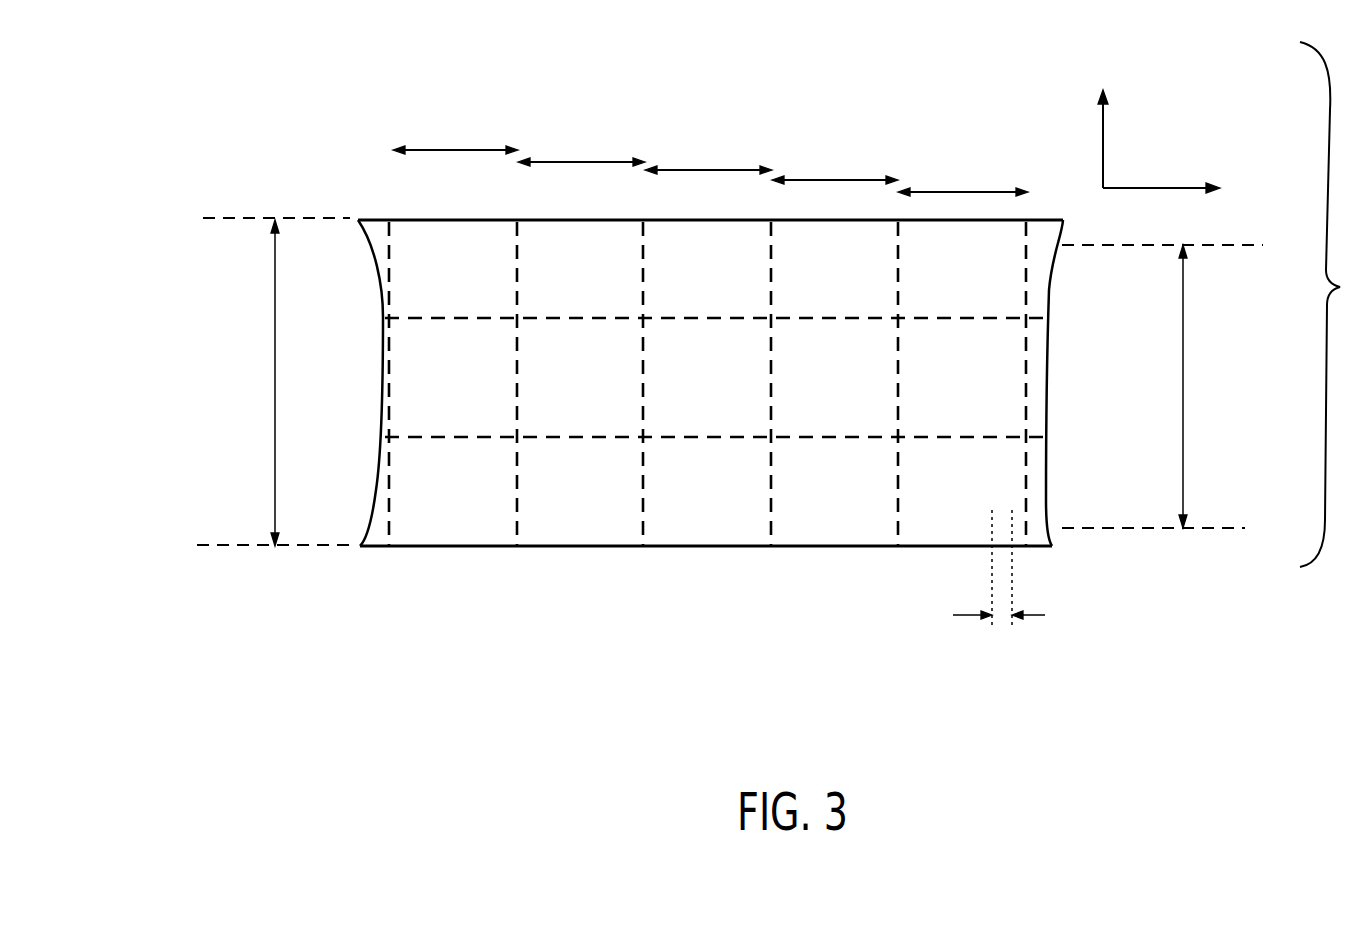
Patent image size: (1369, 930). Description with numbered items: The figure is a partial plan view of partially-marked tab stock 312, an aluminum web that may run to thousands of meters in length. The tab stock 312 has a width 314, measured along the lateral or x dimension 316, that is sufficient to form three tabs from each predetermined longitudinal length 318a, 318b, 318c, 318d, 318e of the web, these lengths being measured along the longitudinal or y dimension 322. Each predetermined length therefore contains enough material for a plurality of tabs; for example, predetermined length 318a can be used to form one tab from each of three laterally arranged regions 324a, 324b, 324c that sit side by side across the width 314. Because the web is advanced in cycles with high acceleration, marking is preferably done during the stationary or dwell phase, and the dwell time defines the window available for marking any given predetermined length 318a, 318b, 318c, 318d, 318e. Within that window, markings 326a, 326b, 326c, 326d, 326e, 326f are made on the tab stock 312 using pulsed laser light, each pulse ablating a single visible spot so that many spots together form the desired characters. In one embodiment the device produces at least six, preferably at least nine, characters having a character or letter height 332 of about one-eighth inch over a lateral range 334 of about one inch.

The tab stock 312 is at (582, 547).
The width 314 is at (275, 362).
The x dimension 316 is at (1105, 117).
The predetermined longitudinal length 318a is at (950, 192).
The predetermined longitudinal length 318b is at (820, 180).
The predetermined longitudinal length 318c is at (703, 170).
The predetermined longitudinal length 318d is at (575, 162).
The predetermined longitudinal length 318e is at (450, 150).
The y dimension 322 is at (1173, 188).
The laterally arranged region 324a is at (968, 280).
The laterally arranged region 324b is at (968, 383).
The laterally arranged region 324c is at (968, 493).
The marking 326a is at (1021, 232).
The marking 326b is at (1022, 380).
The marking 326c is at (1007, 485).
The marking 326d is at (832, 488).
The marking 326e is at (837, 390).
The marking 326f is at (813, 250).
The character height 332 is at (1035, 616).
The lateral range 334 is at (1183, 340).